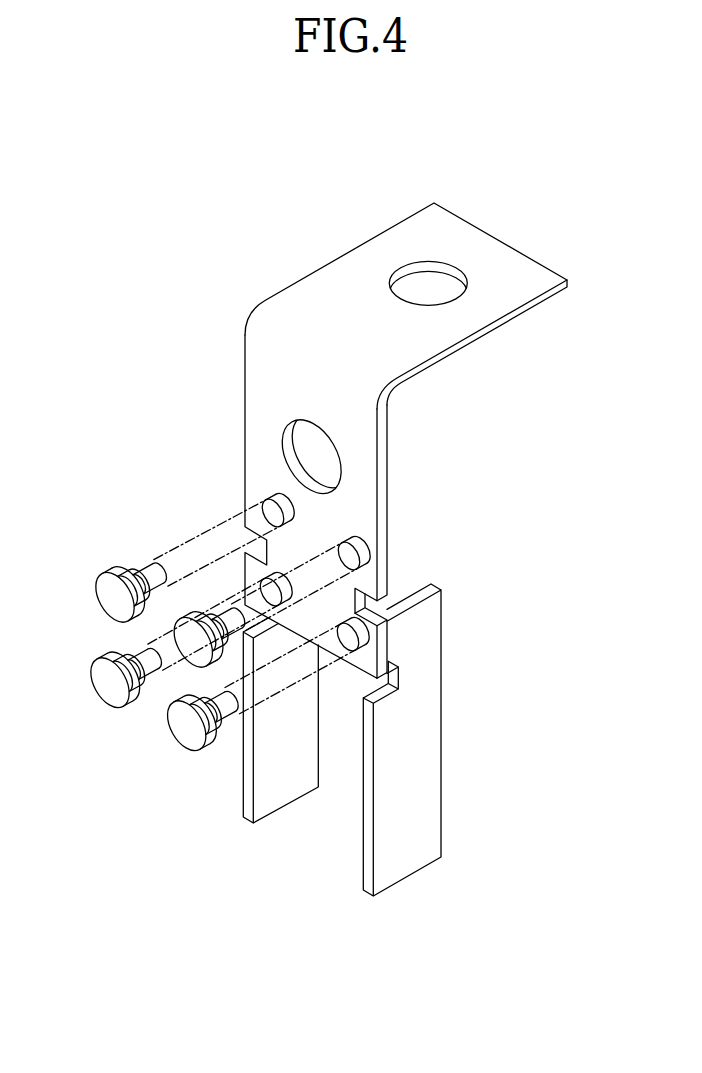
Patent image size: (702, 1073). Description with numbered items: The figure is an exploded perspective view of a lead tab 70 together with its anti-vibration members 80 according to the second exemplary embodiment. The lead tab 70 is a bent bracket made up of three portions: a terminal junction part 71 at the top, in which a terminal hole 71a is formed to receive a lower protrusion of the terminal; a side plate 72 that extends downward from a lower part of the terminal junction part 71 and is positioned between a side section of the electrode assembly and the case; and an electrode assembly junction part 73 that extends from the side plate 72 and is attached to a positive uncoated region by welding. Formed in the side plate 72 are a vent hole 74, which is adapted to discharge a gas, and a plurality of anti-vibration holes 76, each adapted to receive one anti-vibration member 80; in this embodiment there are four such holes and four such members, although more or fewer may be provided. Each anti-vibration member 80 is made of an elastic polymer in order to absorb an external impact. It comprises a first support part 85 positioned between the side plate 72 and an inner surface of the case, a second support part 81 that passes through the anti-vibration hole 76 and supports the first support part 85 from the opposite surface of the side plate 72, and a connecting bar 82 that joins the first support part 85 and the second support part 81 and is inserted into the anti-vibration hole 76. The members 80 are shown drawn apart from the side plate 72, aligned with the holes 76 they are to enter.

The lead tab 70 is at (336, 232).
The terminal junction part 71 is at (503, 268).
The terminal hole 71a is at (431, 262).
The side plate 72 is at (263, 427).
The electrode assembly junction part 73 is at (423, 778).
The vent hole 74 is at (338, 456).
The anti-vibration hole 76 is at (358, 548).
The anti-vibration member 80 is at (97, 564).
The second support part 81 is at (157, 570).
The connecting bar 82 is at (142, 568).
The first support part 85 is at (112, 597).